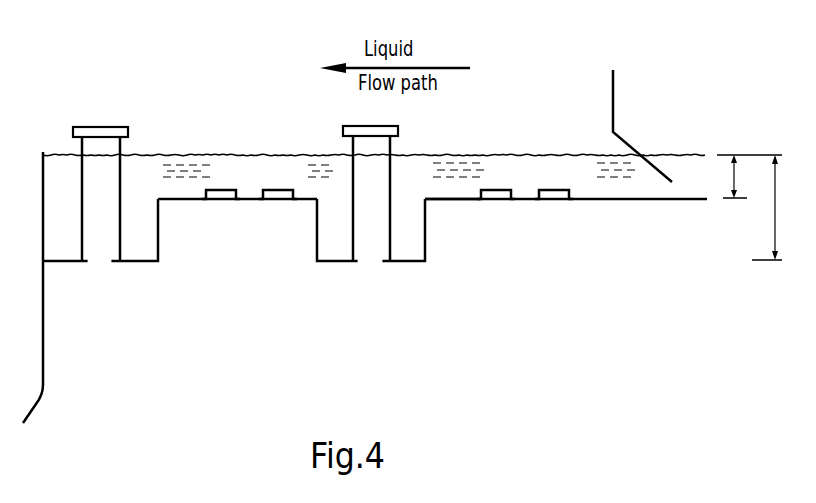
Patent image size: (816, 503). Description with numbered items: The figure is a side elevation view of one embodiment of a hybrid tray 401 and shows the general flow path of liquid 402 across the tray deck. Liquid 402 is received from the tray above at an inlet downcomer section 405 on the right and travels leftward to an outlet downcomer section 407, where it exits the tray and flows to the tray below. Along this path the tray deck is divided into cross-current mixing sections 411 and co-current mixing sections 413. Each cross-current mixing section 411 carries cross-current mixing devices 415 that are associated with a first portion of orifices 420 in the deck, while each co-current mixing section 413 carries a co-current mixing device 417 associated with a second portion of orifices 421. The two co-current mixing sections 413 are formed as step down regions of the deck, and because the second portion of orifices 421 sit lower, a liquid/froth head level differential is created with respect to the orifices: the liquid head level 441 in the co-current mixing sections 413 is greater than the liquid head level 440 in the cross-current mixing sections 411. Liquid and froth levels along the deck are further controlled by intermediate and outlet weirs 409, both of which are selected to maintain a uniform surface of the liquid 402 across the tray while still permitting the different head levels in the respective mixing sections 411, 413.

The hybrid tray 401 is at (538, 90).
The liquid 402 is at (202, 152).
The inlet downcomer section 405 is at (643, 200).
The outlet downcomer section 407 is at (45, 325).
The intermediate and outlet weirs 409 is at (43, 170).
The cross-current mixing section 411 is at (180, 200).
The co-current mixing section 413 is at (138, 263).
The cross-current mixing device 415 is at (275, 190).
The co-current mixing device 417 is at (97, 125).
The first portion of orifices 420 is at (280, 199).
The second portion of orifices 421 is at (98, 265).
The liquid head level in the cross-current mixing section 440 is at (735, 178).
The liquid head level in the co-current mixing section 441 is at (773, 214).